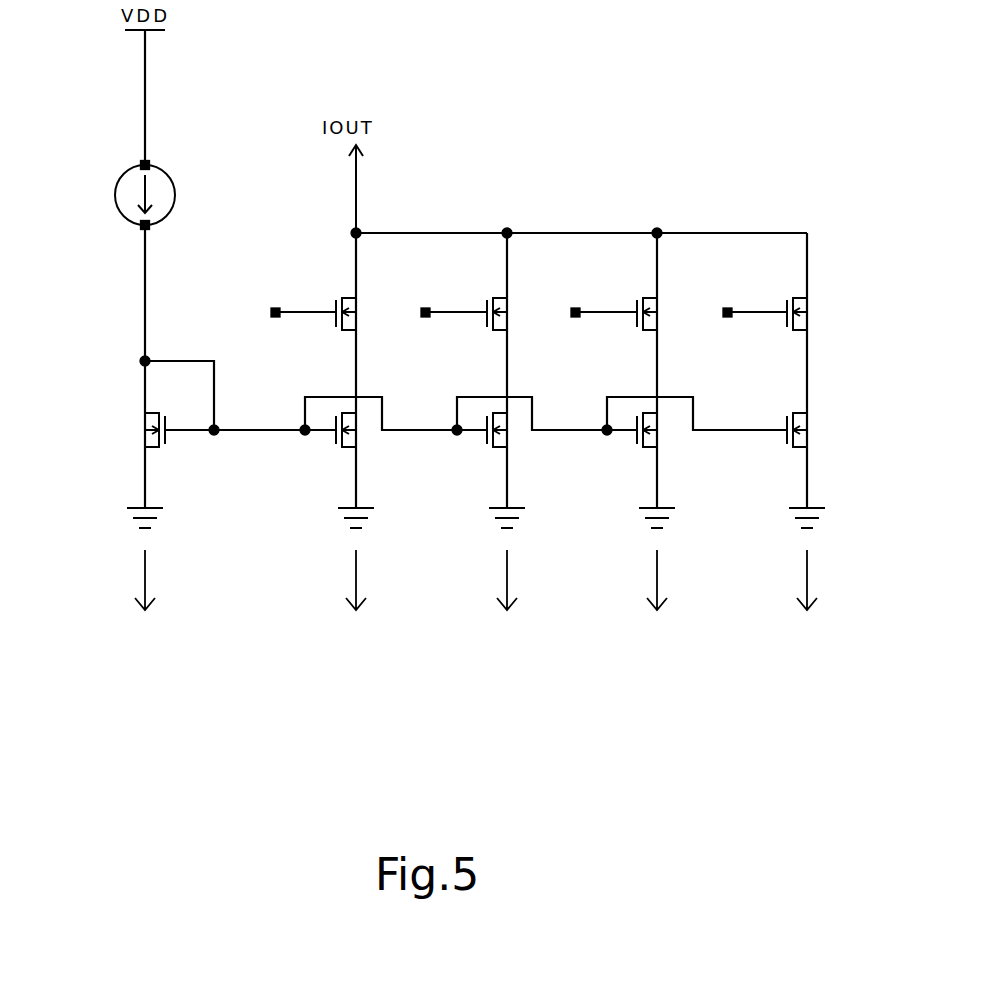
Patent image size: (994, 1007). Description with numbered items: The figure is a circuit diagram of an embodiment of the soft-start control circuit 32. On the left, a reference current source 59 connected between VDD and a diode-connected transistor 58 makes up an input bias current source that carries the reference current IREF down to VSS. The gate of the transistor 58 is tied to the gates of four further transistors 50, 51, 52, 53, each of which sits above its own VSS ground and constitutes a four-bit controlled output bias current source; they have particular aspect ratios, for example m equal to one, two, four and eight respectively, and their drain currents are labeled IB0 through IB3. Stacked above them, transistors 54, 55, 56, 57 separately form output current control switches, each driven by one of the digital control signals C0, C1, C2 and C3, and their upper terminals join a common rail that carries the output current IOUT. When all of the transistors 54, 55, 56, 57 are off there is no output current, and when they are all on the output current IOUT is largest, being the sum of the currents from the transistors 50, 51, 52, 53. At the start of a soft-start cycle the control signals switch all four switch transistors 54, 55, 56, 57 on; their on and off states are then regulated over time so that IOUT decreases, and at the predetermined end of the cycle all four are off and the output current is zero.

The soft-start control circuit 32 is at (645, 47).
The transistor 50 is at (376, 457).
The transistor 51 is at (528, 459).
The transistor 52 is at (678, 457).
The transistor 53 is at (828, 457).
The transistor 54 is at (376, 349).
The transistor 55 is at (528, 349).
The transistor 56 is at (678, 349).
The transistor 57 is at (828, 349).
The transistor 58 is at (174, 467).
The reference current source 59 is at (194, 210).